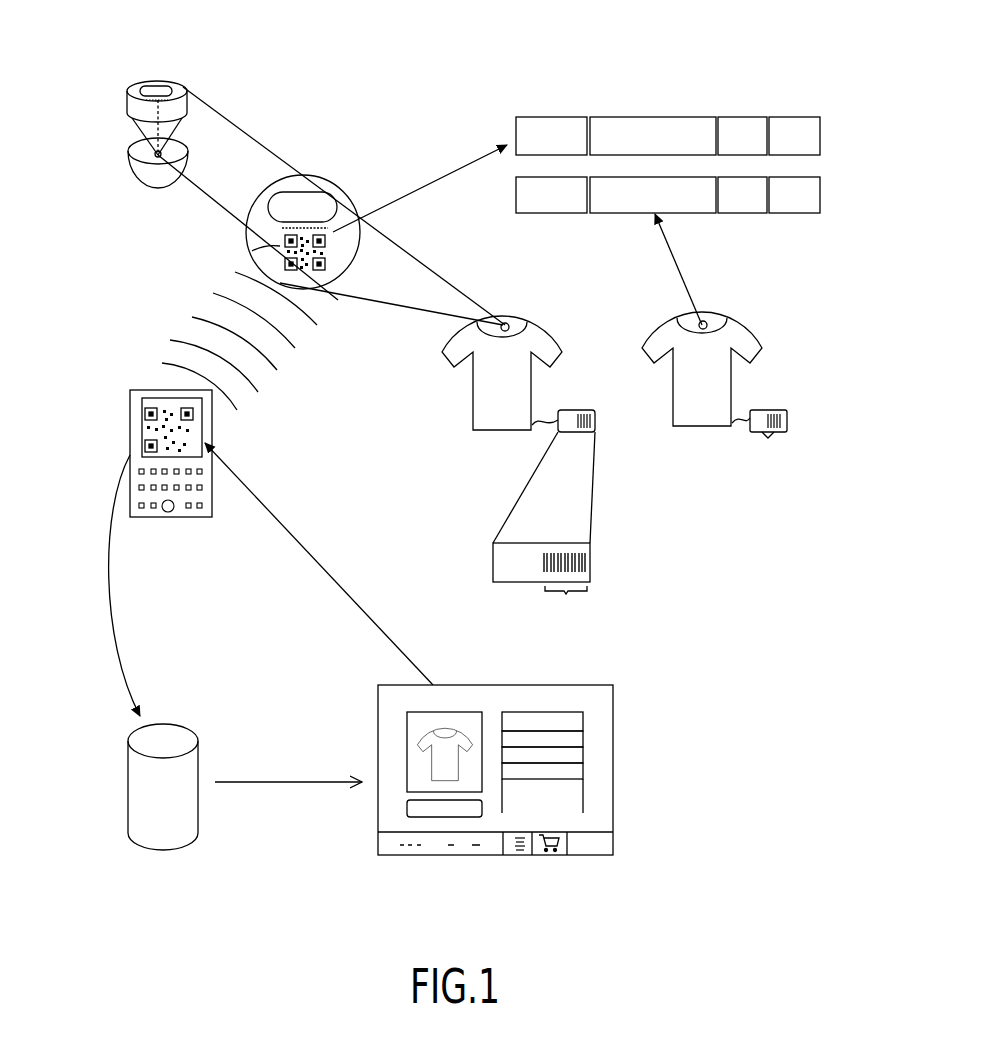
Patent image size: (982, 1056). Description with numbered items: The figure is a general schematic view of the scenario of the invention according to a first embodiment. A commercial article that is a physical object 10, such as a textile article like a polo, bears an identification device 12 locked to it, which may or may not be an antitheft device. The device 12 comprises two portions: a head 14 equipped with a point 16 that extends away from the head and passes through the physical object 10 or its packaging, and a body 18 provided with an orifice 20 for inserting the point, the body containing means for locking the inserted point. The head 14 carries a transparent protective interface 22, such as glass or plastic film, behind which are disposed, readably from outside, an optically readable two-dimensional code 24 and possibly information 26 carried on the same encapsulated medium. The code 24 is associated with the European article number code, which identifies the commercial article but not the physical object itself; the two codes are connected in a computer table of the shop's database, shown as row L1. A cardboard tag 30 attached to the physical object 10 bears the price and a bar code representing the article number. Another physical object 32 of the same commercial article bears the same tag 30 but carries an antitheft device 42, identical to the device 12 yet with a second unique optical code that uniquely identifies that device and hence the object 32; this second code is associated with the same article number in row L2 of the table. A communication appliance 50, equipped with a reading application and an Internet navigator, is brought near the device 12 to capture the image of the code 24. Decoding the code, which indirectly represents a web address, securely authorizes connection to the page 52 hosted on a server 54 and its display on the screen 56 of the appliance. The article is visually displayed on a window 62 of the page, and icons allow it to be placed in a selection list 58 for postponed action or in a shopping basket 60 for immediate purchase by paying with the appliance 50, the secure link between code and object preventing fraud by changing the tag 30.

The physical object 10 is at (470, 408).
The identification device 12 is at (303, 176).
The head 14 is at (127, 108).
The point 16 is at (136, 124).
The body 18 is at (154, 189).
The orifice 20 is at (154, 155).
The transparent protective interface 22 is at (180, 88).
The optically readable code 24 is at (328, 250).
The information 26 is at (273, 198).
The tag 30 is at (595, 422).
The physical object 32 is at (668, 404).
The antitheft device 42 is at (710, 319).
The communication appliance 50 is at (166, 439).
The page 52 is at (502, 797).
The server 54 is at (163, 851).
The screen 56 is at (200, 420).
The selection list 58 is at (520, 856).
The shopping basket 60 is at (558, 852).
The window 62 is at (410, 725).
The row L1 is at (516, 135).
The row L2 is at (516, 193).